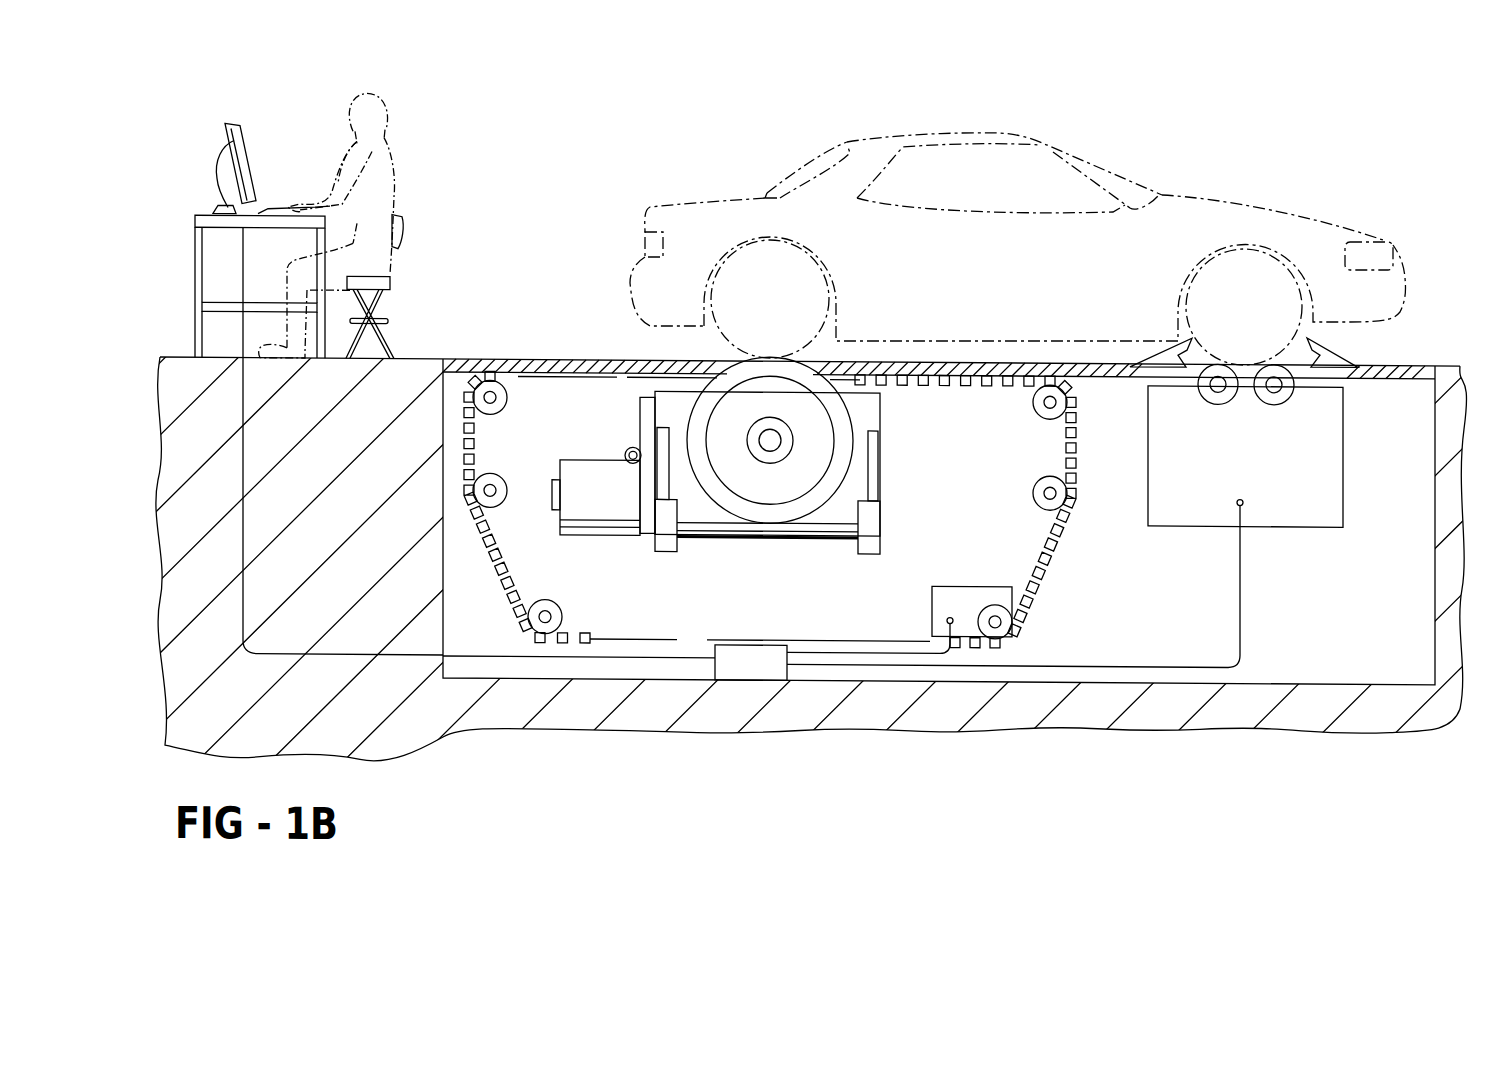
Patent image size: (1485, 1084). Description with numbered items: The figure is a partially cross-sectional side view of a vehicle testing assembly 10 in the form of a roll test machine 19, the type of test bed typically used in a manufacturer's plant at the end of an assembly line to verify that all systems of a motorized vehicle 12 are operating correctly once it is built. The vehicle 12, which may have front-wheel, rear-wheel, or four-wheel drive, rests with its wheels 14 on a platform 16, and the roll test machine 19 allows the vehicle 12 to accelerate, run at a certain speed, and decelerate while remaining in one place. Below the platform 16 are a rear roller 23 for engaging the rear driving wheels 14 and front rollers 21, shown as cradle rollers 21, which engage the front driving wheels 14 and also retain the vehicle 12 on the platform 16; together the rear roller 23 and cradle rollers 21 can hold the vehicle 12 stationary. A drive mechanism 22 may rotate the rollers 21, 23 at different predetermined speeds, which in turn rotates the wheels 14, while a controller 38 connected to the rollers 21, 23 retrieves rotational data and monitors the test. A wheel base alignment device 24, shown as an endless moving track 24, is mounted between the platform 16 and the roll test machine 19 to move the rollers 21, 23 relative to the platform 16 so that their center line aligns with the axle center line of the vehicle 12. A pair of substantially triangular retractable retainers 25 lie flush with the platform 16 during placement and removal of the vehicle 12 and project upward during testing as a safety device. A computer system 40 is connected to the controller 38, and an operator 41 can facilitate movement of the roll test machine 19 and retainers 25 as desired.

The vehicle testing assembly 10 is at (1017, 215).
The motorized vehicle 12 is at (1172, 216).
The wheel 14 is at (803, 300).
The platform 16 is at (1425, 364).
The roll test machine 19 is at (803, 513).
The front rollers (cradle rollers) 21 is at (1271, 400).
The drive mechanism 22 is at (1330, 462).
The rear rollers 23 is at (862, 408).
The wheel base alignment device (endless moving track) 24 is at (478, 523).
The retractable retainers 25 is at (1173, 344).
The controller 38 is at (755, 668).
The computer system 40 is at (228, 122).
The operator 41 is at (390, 176).